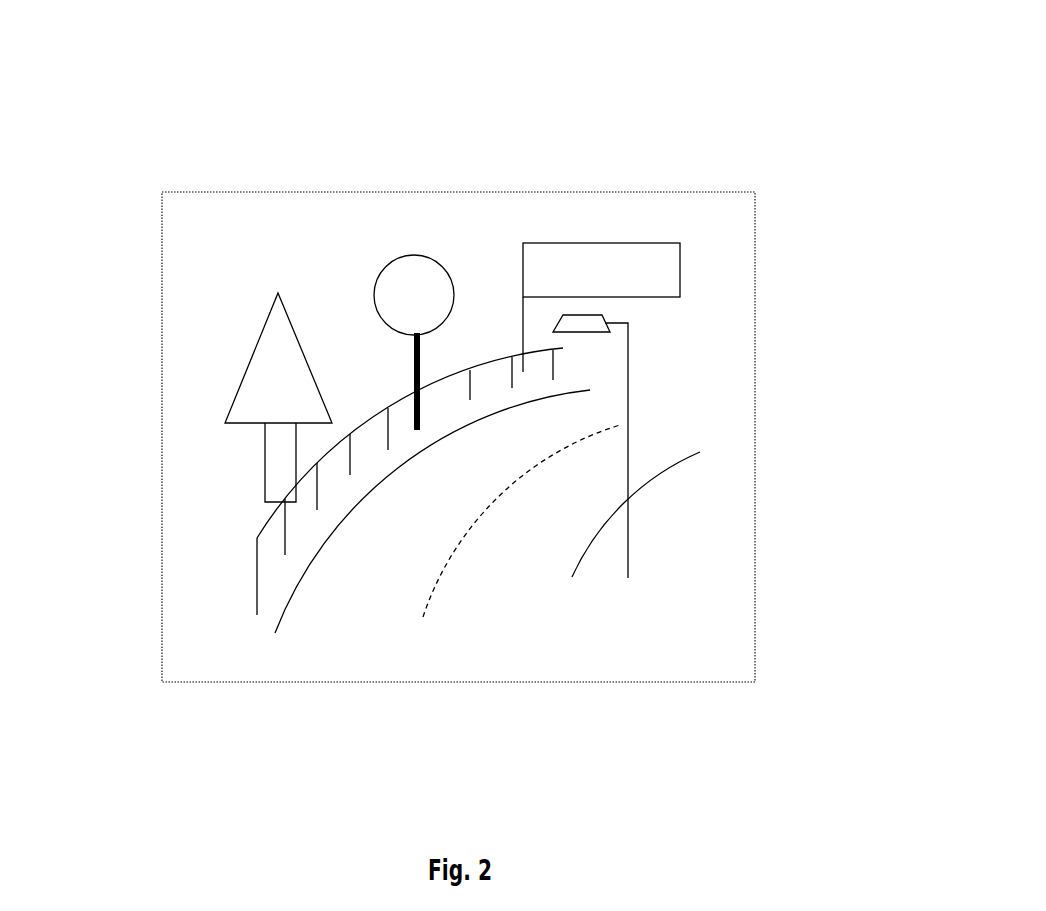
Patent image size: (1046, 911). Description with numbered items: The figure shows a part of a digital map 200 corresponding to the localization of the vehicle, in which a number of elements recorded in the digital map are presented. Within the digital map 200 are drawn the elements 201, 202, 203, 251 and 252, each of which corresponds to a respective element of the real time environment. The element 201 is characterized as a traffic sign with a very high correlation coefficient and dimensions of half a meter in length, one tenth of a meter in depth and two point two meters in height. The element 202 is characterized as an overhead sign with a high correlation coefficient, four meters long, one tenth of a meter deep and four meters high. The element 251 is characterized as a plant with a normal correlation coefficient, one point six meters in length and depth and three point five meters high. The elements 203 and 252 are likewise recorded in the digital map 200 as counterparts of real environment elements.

The digital map 200 is at (614, 142).
The element 201 is at (389, 255).
The element 202 is at (544, 237).
The element 203 is at (318, 534).
The element 251 is at (276, 392).
The element 252 is at (627, 403).